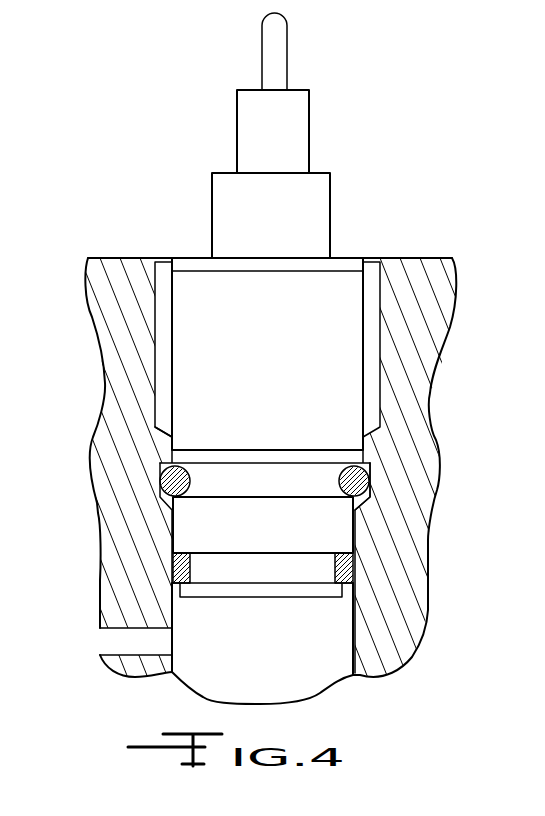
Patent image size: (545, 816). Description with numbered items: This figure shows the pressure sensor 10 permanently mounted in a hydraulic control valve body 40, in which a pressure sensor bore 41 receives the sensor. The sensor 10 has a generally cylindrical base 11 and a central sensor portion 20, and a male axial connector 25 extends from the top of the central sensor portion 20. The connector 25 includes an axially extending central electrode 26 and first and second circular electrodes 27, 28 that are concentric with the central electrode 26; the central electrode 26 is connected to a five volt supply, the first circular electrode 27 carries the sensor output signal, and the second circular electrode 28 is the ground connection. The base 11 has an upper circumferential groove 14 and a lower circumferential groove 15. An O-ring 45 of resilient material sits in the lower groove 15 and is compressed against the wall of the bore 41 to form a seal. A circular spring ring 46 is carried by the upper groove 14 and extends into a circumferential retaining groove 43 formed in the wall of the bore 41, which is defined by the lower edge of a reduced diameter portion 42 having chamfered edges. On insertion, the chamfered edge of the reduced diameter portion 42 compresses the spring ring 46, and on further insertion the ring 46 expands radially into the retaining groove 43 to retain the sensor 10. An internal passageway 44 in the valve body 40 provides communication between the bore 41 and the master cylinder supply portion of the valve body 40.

The pressure sensor 10 is at (370, 225).
The base 11 is at (262, 540).
The upper circumferential groove 14 is at (338, 480).
The lower circumferential groove 15 is at (334, 568).
The central sensor portion 20 is at (288, 369).
The male axial connector 25 is at (245, 135).
The central electrode 26 is at (277, 52).
The first circular electrode 27 is at (284, 144).
The second circular electrode 28 is at (282, 235).
The hydraulic control valve body 40 is at (443, 338).
The pressure sensor bore 41 is at (278, 657).
The reduced diameter portion 42 is at (166, 441).
The circumferential retaining groove 43 is at (378, 495).
The internal passageway 44 is at (122, 641).
The O-ring 45 is at (191, 563).
The circular spring ring 46 is at (191, 478).